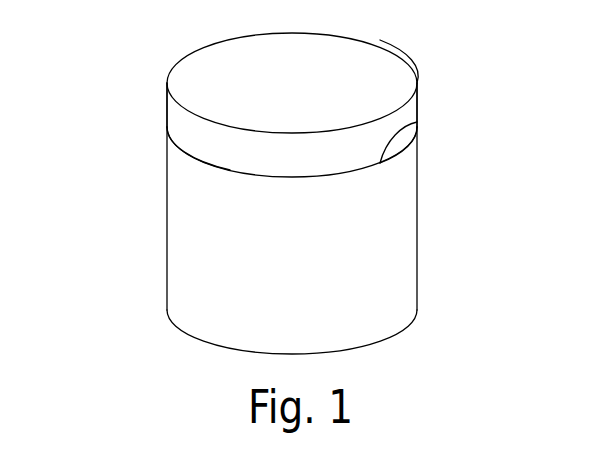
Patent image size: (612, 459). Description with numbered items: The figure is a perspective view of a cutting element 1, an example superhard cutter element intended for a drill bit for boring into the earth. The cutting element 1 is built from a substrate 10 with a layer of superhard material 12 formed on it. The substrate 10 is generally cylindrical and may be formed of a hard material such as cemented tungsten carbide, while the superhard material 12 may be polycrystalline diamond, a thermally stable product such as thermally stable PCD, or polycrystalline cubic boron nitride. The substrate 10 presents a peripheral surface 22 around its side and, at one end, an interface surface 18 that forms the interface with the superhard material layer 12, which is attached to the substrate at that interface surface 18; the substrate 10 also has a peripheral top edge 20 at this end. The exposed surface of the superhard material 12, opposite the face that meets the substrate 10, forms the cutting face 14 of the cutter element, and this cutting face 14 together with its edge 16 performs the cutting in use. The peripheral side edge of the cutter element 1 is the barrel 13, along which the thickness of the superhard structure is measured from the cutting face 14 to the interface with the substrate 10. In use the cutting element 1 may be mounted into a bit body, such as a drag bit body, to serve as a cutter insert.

The cutting element 1 is at (127, 43).
The substrate 10 is at (167, 220).
The layer of superhard material 12 is at (180, 115).
The barrel 13 is at (167, 127).
The cutting face 14 is at (382, 68).
The edge 16 is at (417, 83).
The interface surface 18 is at (408, 145).
The peripheral top edge 20 is at (417, 122).
The peripheral surface 22 is at (306, 260).